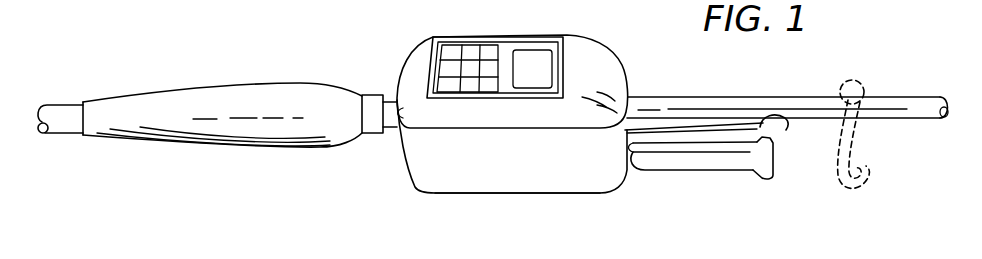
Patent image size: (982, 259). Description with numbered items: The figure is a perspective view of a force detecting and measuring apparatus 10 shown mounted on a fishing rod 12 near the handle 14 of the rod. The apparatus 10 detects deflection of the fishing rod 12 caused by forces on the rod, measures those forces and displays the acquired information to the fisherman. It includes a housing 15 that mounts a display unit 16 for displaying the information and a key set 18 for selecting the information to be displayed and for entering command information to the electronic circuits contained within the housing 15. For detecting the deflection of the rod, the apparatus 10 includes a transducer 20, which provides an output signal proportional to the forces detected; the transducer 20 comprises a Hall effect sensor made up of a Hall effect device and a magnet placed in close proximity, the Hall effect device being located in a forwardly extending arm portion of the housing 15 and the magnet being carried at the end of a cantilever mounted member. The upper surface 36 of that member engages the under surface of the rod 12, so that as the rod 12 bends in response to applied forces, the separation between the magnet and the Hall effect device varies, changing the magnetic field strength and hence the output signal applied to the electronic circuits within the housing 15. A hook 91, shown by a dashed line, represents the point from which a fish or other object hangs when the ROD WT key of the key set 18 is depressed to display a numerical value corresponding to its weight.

The force detecting and measuring apparatus 10 is at (408, 174).
The fishing rod 12 is at (698, 95).
The handle 14 is at (257, 84).
The housing 15 is at (616, 186).
The display unit 16 is at (533, 58).
The key set 18 is at (468, 50).
The transducer 20 is at (745, 181).
The upper surface 36 is at (786, 130).
The hook 91 is at (855, 135).